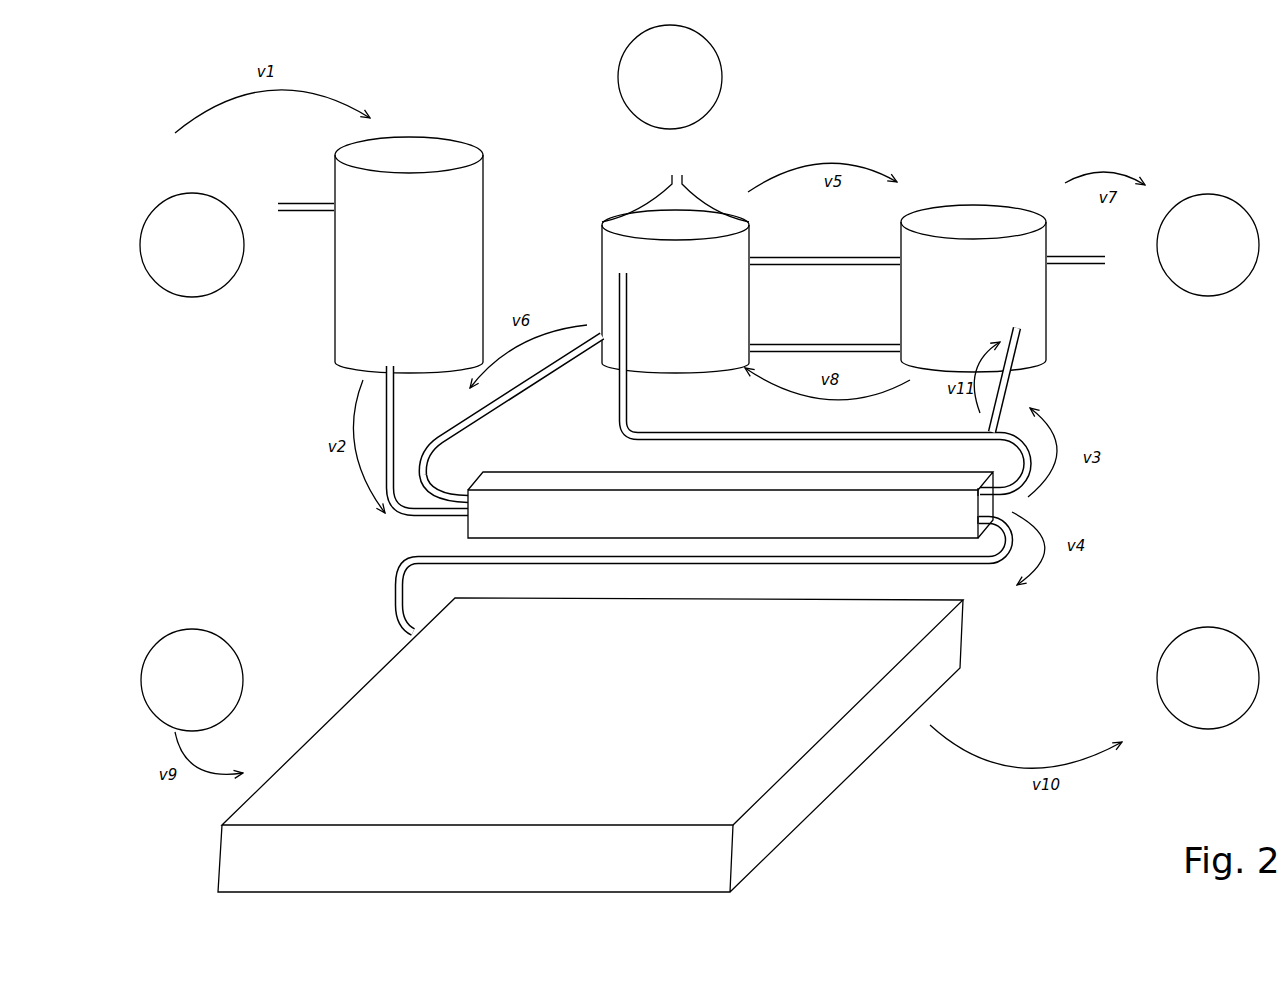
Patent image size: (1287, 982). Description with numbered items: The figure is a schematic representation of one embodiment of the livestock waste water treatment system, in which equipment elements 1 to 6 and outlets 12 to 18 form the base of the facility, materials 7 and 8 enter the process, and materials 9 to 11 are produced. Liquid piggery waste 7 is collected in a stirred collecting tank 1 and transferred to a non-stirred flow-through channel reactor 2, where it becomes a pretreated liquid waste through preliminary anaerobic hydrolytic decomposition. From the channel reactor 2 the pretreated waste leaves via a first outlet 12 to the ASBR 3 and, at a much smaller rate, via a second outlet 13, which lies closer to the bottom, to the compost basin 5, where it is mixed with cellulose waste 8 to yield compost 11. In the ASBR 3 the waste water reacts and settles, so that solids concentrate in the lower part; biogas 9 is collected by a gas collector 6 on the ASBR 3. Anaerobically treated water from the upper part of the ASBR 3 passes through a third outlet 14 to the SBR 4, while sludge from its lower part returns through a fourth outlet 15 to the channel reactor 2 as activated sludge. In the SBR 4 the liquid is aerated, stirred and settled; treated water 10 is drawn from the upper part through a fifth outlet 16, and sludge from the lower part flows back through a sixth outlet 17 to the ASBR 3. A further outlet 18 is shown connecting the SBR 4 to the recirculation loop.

The collecting tank 1 is at (409, 255).
The flow-through channel reactor 2 is at (730, 505).
The ASBR 3 is at (675, 291).
The SBR 4 is at (973, 288).
The compost basin 5 is at (590, 745).
The gas collector 6 is at (675, 198).
The liquid piggery waste 7 is at (237, 245).
The cellulose waste 8 is at (192, 680).
The biogas 9 is at (670, 77).
The treated water 10 is at (1208, 245).
The compost 11 is at (1208, 678).
The first outlet 12 is at (979, 493).
The second outlet 13 is at (978, 520).
The third outlet 14 is at (809, 261).
The fourth outlet 15 is at (512, 403).
The fifth outlet 16 is at (1076, 274).
The sixth outlet 17 is at (841, 347).
The connecting pipe 18 is at (995, 395).